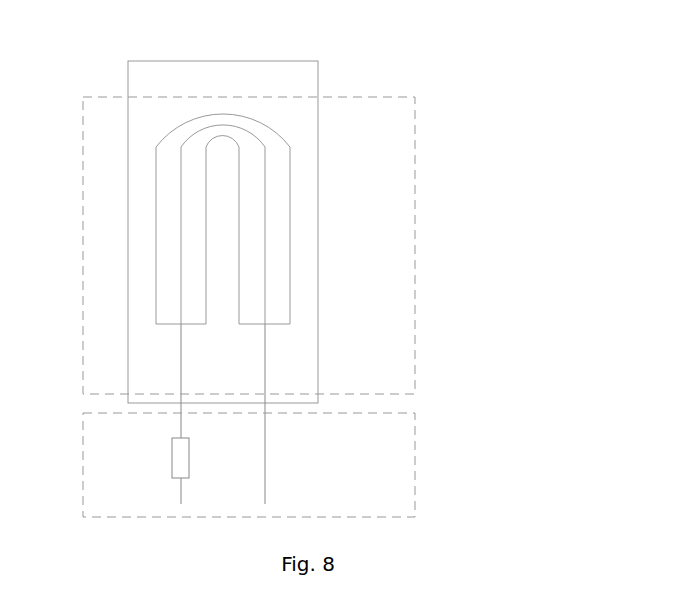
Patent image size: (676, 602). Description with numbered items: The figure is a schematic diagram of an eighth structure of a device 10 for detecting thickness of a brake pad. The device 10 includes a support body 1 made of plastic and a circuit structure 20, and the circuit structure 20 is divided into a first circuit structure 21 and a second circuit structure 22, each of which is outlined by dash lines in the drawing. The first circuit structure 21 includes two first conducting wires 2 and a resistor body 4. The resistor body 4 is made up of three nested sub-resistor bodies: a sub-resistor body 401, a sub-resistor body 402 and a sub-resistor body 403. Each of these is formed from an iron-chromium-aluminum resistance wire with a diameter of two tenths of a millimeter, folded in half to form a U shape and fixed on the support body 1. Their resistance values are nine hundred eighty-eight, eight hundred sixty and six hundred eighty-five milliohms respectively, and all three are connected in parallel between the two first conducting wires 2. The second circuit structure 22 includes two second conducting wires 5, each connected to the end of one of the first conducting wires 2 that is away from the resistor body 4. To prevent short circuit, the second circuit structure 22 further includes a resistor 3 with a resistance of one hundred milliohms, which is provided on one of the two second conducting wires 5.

The device for detecting thickness of a brake pad 10 is at (232, 19).
The support body 1 is at (318, 61).
The resistor body 4 is at (139, 196).
The sub-resistor body 401 is at (290, 197).
The sub-resistor body 402 is at (265, 236).
The sub-resistor body 403 is at (239, 273).
The first conducting wire 2 is at (181, 353).
The second conducting wire 5 is at (181, 425).
The resistor 3 is at (189, 461).
The circuit structure 20 is at (324, 307).
The first circuit structure 21 is at (415, 245).
The second circuit structure 22 is at (288, 465).